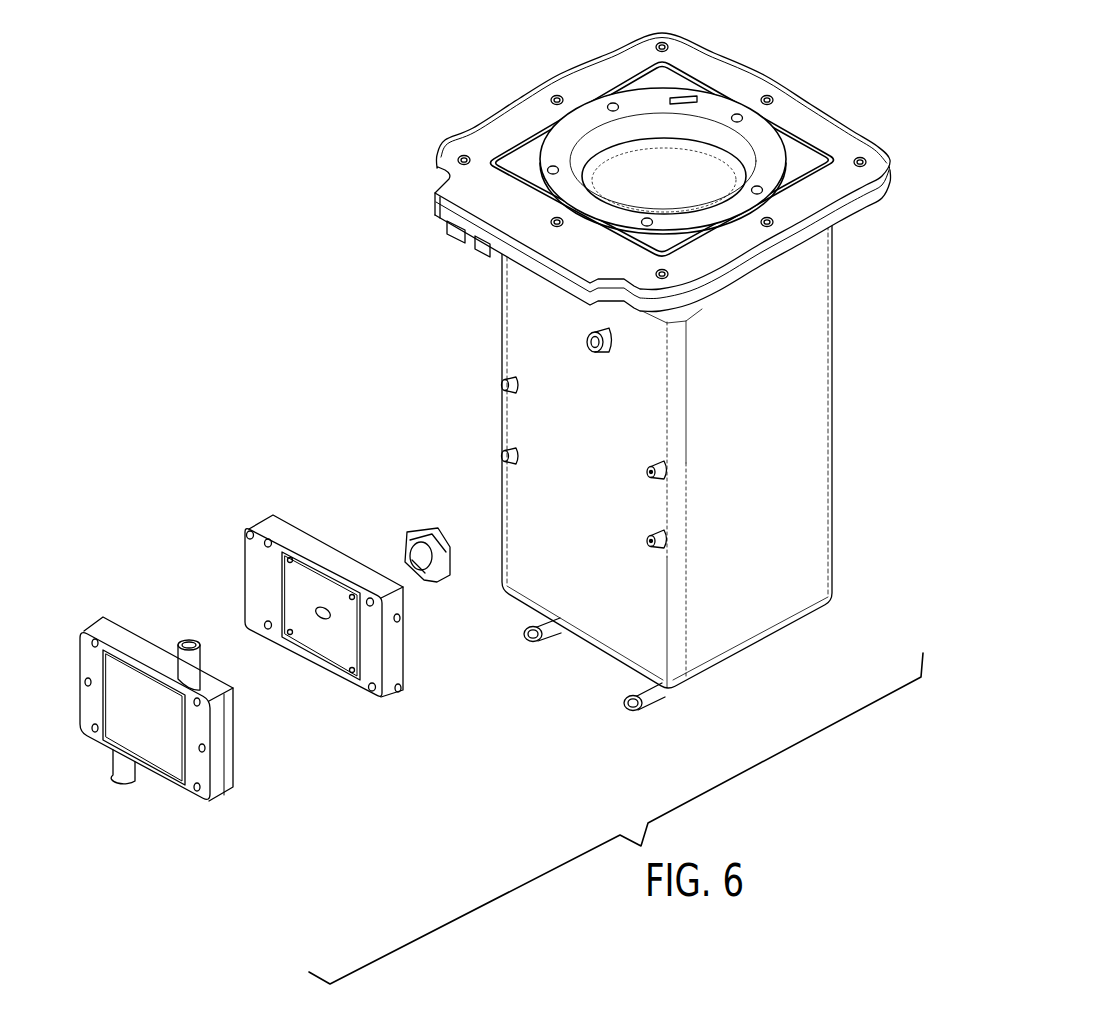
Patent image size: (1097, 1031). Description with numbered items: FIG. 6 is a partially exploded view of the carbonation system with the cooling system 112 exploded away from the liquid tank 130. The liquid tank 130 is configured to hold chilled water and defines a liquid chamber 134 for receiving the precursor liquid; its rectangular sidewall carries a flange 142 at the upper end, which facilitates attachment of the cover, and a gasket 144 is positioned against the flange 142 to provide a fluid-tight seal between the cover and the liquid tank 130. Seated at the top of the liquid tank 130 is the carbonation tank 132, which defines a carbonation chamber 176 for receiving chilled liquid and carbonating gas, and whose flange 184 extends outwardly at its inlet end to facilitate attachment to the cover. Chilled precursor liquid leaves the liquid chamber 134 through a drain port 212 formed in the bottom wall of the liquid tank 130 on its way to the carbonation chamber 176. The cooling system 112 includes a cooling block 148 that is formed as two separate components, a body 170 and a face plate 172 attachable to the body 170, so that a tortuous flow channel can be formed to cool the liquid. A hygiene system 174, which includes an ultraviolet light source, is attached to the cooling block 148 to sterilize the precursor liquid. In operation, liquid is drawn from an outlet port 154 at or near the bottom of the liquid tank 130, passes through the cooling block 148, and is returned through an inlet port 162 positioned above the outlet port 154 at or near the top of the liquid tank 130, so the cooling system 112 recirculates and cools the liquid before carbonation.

The cooling system 112 is at (177, 470).
The liquid tank 130 is at (723, 642).
The carbonation tank 132 is at (638, 102).
The liquid chamber 134 is at (797, 157).
The flange 142 is at (840, 208).
The gasket 144 is at (480, 138).
The cooling block 148 is at (364, 786).
The outlet port 154 is at (547, 635).
The inlet port 162 is at (582, 343).
The body 170 is at (217, 777).
The face plate 172 is at (398, 658).
The hygiene system 174 is at (415, 532).
The carbonation chamber 176 is at (665, 170).
The flange 184 is at (748, 127).
The drain port 212 is at (643, 700).